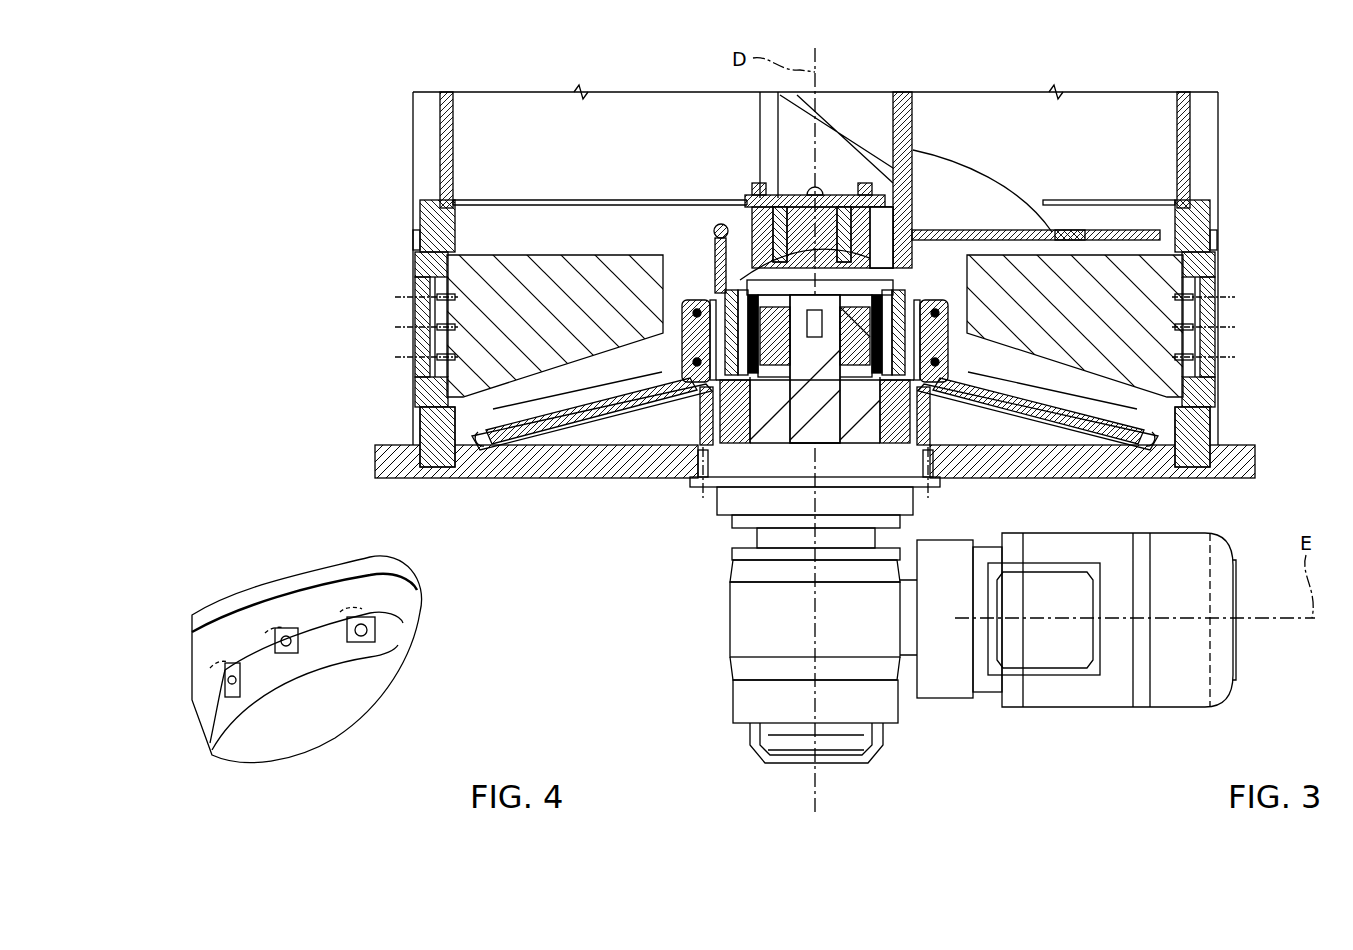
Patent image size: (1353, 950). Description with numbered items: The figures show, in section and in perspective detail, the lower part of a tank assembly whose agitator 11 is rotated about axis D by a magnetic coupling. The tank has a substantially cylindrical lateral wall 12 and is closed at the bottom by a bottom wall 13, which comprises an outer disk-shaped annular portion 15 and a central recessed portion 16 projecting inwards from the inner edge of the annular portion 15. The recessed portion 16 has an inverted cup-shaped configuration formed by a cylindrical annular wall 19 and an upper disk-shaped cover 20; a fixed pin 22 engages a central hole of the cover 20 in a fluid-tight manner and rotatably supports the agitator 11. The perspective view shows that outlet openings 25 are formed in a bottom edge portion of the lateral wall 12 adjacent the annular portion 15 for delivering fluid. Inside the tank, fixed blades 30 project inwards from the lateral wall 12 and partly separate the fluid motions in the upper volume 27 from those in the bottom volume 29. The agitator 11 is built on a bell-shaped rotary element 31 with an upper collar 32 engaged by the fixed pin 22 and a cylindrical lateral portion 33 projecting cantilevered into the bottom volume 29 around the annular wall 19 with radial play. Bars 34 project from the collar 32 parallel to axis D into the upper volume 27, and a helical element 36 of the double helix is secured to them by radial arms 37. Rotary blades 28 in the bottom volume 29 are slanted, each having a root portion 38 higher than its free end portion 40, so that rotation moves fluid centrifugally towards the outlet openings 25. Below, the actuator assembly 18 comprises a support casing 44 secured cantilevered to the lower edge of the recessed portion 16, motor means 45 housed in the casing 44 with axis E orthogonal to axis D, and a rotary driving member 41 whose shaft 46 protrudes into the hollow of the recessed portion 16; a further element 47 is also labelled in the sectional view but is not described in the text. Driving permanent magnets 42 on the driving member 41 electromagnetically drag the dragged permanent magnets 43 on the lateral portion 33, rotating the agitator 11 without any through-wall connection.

In FIG. 3, the agitator 11 is at (1122, 118).
In FIG. 3, the lateral wall 12 is at (1192, 136).
In FIG. 4, the lateral wall 12 is at (241, 640).
In FIG. 3, the bottom wall 13 is at (628, 480).
In FIG. 4, the bottom wall 13 is at (373, 660).
In FIG. 3, the annular portion 15 is at (1106, 480).
In FIG. 4, the annular portion 15 is at (273, 738).
In FIG. 3, the recessed portion 16 is at (709, 482).
In FIG. 3, the actuator assembly 18 is at (1043, 728).
In FIG. 3, the annular wall 19 is at (898, 424).
In FIG. 3, the cover 20 is at (716, 246).
In FIG. 3, the fixed pin 22 is at (829, 198).
In FIG. 4, the outlet openings 25 is at (362, 645).
In FIG. 3, the upper volume 27 is at (520, 118).
In FIG. 3, the rotary blades 28 is at (563, 422).
In FIG. 3, the bottom volume 29 is at (1160, 413).
In FIG. 3, the fixed blades 30 is at (470, 308).
In FIG. 3, the rotary element 31 is at (882, 205).
In FIG. 3, the upper collar 32 is at (760, 216).
In FIG. 3, the lateral portion 33 is at (720, 422).
In FIG. 3, the bars 34 is at (765, 128).
In FIG. 3, the helical element 36 is at (1005, 192).
In FIG. 3, the arms 37 is at (1126, 236).
In FIG. 3, the root portion 38 is at (634, 405).
In FIG. 3, the free end portion 40 is at (484, 446).
In FIG. 3, the rotary driving member 41 is at (800, 430).
In FIG. 3, the driving permanent magnets 42 is at (748, 305).
In FIG. 3, the dragged permanent magnets 43 is at (731, 336).
In FIG. 3, the support casing 44 is at (888, 695).
In FIG. 3, the motor means 45 is at (1112, 660).
In FIG. 3, the shaft 46 is at (795, 417).
In FIG. 3, the key 47 is at (853, 337).